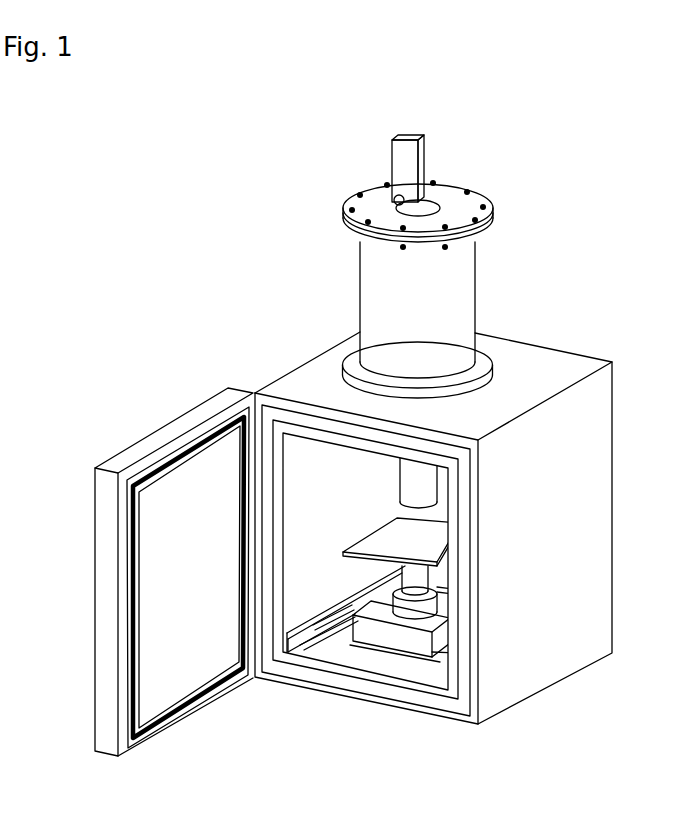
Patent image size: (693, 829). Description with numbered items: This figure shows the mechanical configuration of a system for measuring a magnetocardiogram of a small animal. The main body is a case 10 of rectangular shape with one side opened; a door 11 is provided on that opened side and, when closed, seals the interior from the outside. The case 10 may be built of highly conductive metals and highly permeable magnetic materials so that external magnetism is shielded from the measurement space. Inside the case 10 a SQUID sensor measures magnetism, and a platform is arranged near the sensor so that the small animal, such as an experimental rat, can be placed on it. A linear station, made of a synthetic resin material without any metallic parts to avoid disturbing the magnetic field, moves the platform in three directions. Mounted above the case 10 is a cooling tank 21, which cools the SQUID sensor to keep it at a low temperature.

The case 10 is at (595, 563).
The door 11 is at (172, 430).
The cooling tank 21 is at (472, 290).